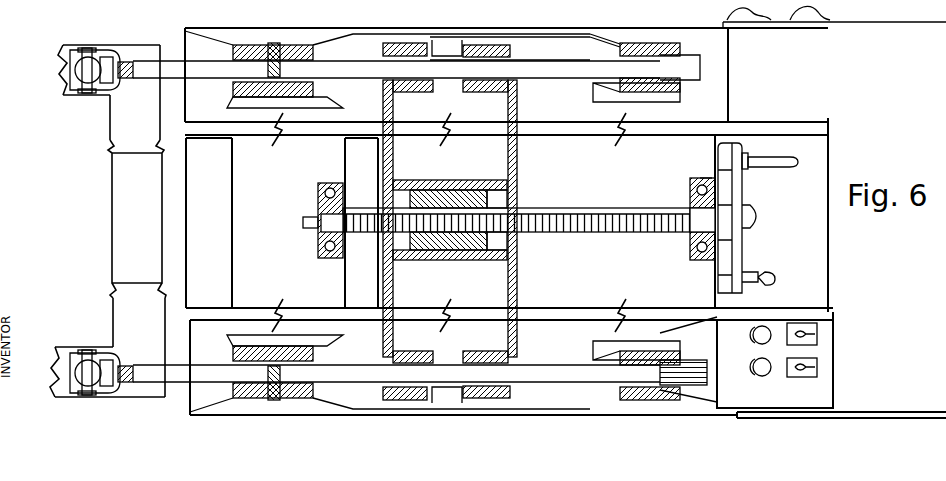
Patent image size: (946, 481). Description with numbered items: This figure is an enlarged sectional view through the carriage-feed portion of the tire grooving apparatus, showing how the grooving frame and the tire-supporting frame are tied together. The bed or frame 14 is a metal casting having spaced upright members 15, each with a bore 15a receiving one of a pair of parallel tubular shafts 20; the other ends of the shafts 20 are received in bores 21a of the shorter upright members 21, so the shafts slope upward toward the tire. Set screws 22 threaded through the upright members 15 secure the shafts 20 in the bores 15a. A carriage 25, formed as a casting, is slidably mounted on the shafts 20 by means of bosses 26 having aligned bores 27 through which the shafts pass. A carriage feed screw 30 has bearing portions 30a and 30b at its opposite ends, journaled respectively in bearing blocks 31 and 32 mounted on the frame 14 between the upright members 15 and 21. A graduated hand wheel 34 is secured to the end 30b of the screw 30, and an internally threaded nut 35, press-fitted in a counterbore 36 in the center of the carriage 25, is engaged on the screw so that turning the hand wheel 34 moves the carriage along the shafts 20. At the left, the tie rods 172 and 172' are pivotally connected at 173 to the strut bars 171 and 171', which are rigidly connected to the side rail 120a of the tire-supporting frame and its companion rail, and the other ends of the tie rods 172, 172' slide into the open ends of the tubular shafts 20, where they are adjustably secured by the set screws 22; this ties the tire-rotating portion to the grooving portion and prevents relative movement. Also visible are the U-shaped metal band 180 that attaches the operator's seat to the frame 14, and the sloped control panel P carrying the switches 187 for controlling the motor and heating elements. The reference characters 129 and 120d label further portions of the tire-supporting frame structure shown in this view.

The frame 129 is at (37, 6).
The U-shaped band of metal 180 is at (880, 22).
The side rail 120a is at (62, 46).
The link bar 120d is at (122, 204).
The bar 171' is at (65, 66).
The pivot connection 173 is at (86, 94).
The tie rod 172' is at (389, 49).
The tie rod 172 is at (389, 353).
The bar 171 is at (93, 369).
The upright member 15 is at (333, 48).
The bore 15a is at (257, 43).
The set screw 22 is at (277, 43).
The boss 26 is at (448, 48).
The bore 27 is at (410, 93).
The carriage 25 is at (518, 160).
The internally threaded nut 35 is at (462, 190).
The counterbore 36 is at (495, 205).
The carriage feed screw 30 is at (593, 208).
The bearing portion 30a is at (330, 220).
The bearing block 31 is at (318, 245).
The bearing portion 30b is at (690, 190).
The bearing block 32 is at (700, 178).
The graduated hand wheel 34 is at (732, 190).
The tubular shaft 20 is at (548, 67).
The frame 14 is at (580, 30).
The upright member 21 is at (693, 43).
The bore 21a is at (593, 97).
The switch 187 is at (820, 365).
The control panel P is at (842, 320).